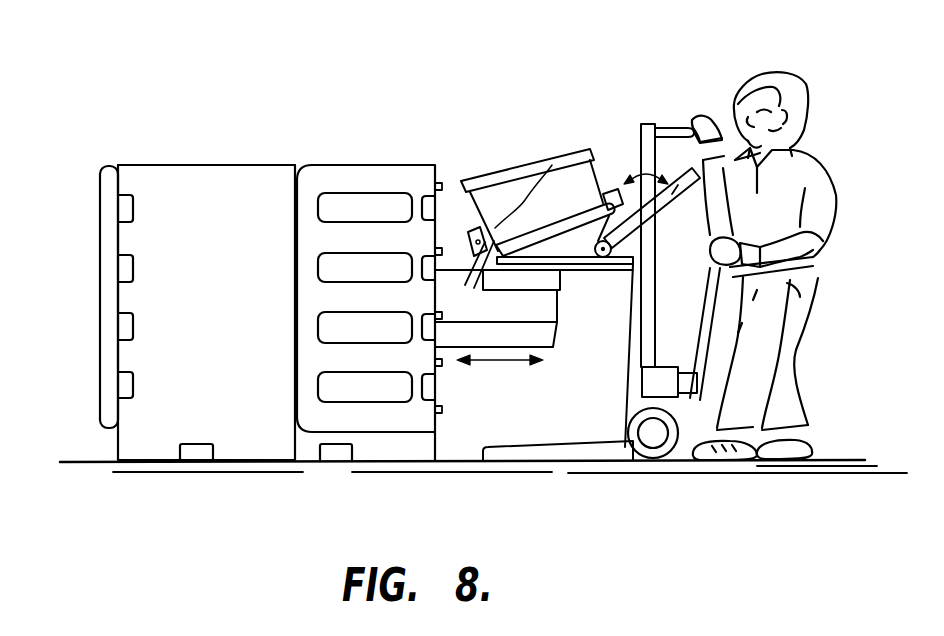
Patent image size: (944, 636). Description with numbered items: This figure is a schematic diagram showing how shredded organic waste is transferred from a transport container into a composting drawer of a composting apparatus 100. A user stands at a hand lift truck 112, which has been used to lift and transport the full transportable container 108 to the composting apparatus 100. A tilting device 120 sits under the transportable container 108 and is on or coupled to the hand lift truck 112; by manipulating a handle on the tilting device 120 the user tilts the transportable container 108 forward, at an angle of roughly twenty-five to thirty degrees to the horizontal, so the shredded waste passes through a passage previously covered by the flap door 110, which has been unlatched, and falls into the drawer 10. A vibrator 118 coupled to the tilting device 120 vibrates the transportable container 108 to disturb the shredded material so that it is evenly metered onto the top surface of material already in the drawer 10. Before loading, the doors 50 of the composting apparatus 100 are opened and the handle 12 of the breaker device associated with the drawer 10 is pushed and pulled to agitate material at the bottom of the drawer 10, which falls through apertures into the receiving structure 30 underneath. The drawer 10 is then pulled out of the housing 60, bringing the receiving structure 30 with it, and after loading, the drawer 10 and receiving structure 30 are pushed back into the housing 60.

The drawer 10 is at (565, 298).
The handle 12 is at (565, 313).
The receiving structure 30 is at (557, 340).
The doors 50 is at (375, 188).
The housing 60 is at (268, 165).
The composting apparatus 100 is at (246, 245).
The transportable container 108 is at (516, 161).
The flap door 110 is at (472, 235).
The hand lift truck 112 is at (643, 462).
The vibrator 118 is at (612, 188).
The tilting device 120 is at (647, 224).